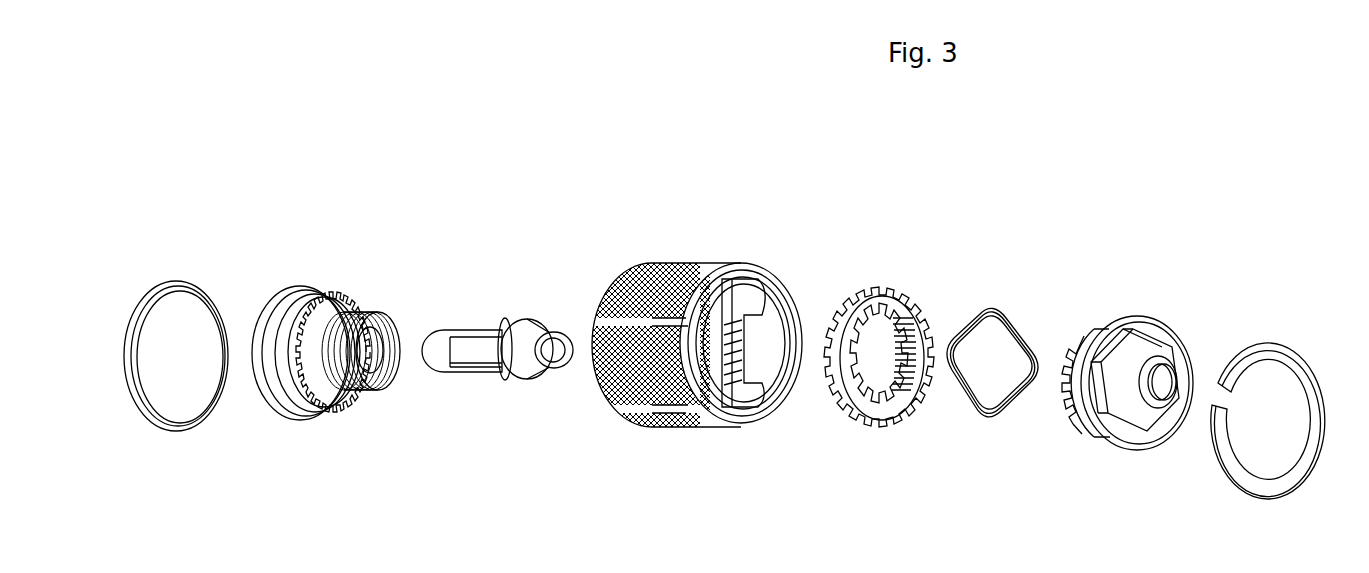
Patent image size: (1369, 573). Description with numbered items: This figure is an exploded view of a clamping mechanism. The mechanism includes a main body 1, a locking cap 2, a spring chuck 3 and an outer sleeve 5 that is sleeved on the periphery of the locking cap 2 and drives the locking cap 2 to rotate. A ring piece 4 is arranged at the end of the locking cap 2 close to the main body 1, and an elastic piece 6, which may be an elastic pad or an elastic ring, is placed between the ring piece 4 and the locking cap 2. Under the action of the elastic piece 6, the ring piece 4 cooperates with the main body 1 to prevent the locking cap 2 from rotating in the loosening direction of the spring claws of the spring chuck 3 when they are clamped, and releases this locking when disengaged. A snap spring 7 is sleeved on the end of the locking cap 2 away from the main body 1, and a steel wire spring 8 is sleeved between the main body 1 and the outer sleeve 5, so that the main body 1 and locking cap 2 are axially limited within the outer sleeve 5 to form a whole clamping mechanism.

The main body 1 is at (294, 410).
The locking cap 2 is at (1142, 322).
The spring chuck 3 is at (477, 370).
The ring piece 4 is at (875, 300).
The outer sleeve 5 is at (753, 273).
The elastic piece 6 is at (985, 417).
The snap spring 7 is at (1304, 352).
The steel wire spring 8 is at (220, 292).